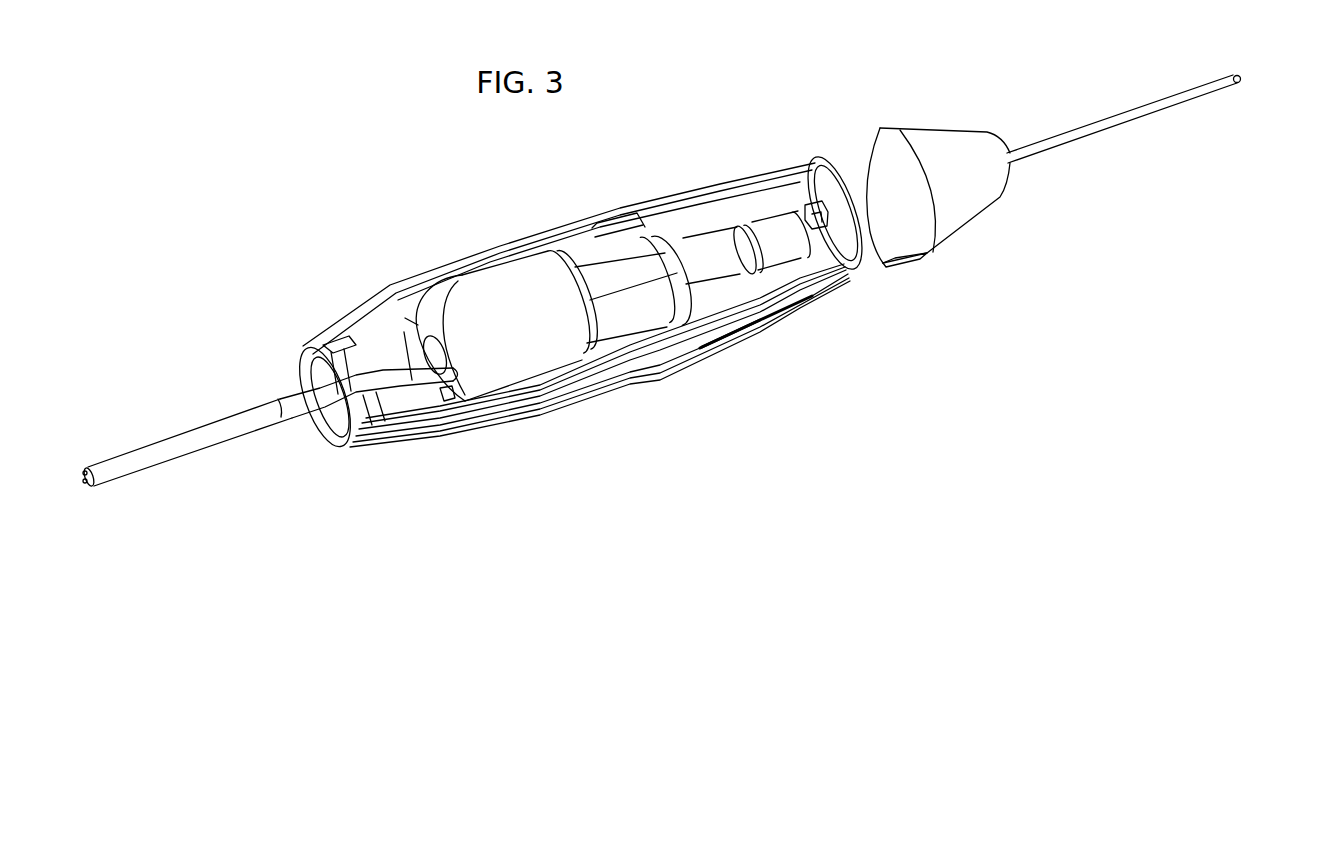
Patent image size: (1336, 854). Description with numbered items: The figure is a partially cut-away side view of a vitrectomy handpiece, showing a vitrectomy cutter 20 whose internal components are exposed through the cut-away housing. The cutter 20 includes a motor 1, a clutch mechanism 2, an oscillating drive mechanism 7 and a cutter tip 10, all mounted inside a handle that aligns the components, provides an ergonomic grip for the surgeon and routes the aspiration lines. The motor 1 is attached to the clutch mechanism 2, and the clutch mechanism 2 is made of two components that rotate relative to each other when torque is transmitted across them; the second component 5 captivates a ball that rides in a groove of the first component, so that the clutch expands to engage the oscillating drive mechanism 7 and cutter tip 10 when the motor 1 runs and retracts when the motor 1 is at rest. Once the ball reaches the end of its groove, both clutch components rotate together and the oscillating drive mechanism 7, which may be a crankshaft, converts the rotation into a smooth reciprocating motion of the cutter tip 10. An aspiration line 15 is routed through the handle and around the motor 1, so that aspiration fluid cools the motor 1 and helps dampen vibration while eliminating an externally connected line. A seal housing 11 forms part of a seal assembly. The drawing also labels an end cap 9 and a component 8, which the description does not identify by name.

The vitrectomy cutter 20 is at (343, 270).
The cutter tip 10 is at (1240, 90).
The cylindrical body 8 is at (528, 358).
The motor 1 is at (603, 272).
The second component 5 is at (717, 225).
The oscillating drive mechanism 7 is at (820, 200).
The end cap 9 is at (962, 204).
The seal housing 11 is at (888, 212).
The clutch mechanism 2 is at (840, 325).
The aspiration line 15 is at (449, 400).